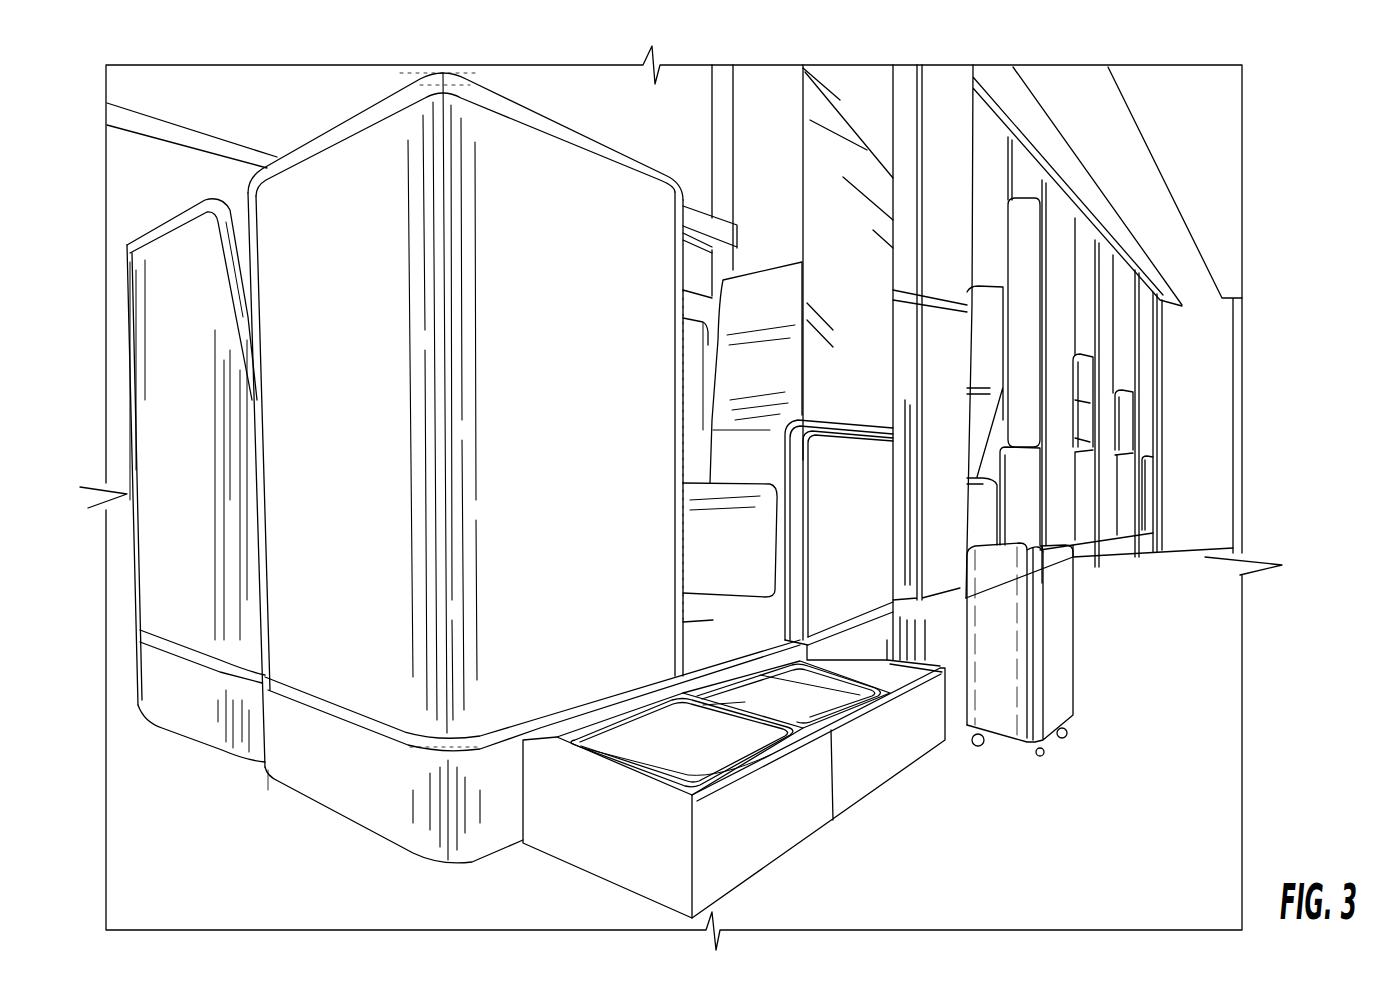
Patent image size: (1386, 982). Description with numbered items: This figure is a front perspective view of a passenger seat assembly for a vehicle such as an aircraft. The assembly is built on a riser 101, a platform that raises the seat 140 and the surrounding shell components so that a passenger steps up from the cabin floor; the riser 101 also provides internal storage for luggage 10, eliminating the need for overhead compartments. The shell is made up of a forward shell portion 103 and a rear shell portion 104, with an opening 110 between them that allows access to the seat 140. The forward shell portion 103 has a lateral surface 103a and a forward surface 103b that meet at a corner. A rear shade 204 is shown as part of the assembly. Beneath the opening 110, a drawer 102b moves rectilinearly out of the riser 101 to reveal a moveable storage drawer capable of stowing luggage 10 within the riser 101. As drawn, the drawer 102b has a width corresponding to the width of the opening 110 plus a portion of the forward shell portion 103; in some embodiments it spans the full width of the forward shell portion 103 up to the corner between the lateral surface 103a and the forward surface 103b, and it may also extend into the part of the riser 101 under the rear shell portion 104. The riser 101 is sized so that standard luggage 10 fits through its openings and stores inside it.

The luggage 10 is at (677, 746).
The riser 101 is at (390, 818).
The drawer 102b is at (860, 770).
The forward shell portion 103 is at (548, 373).
The lateral surface 103a is at (580, 544).
The forward surface 103b is at (320, 518).
The rear shell portion 104 is at (840, 523).
The opening 110 is at (700, 630).
The seat 140 is at (740, 383).
The rear shade 204 is at (831, 293).